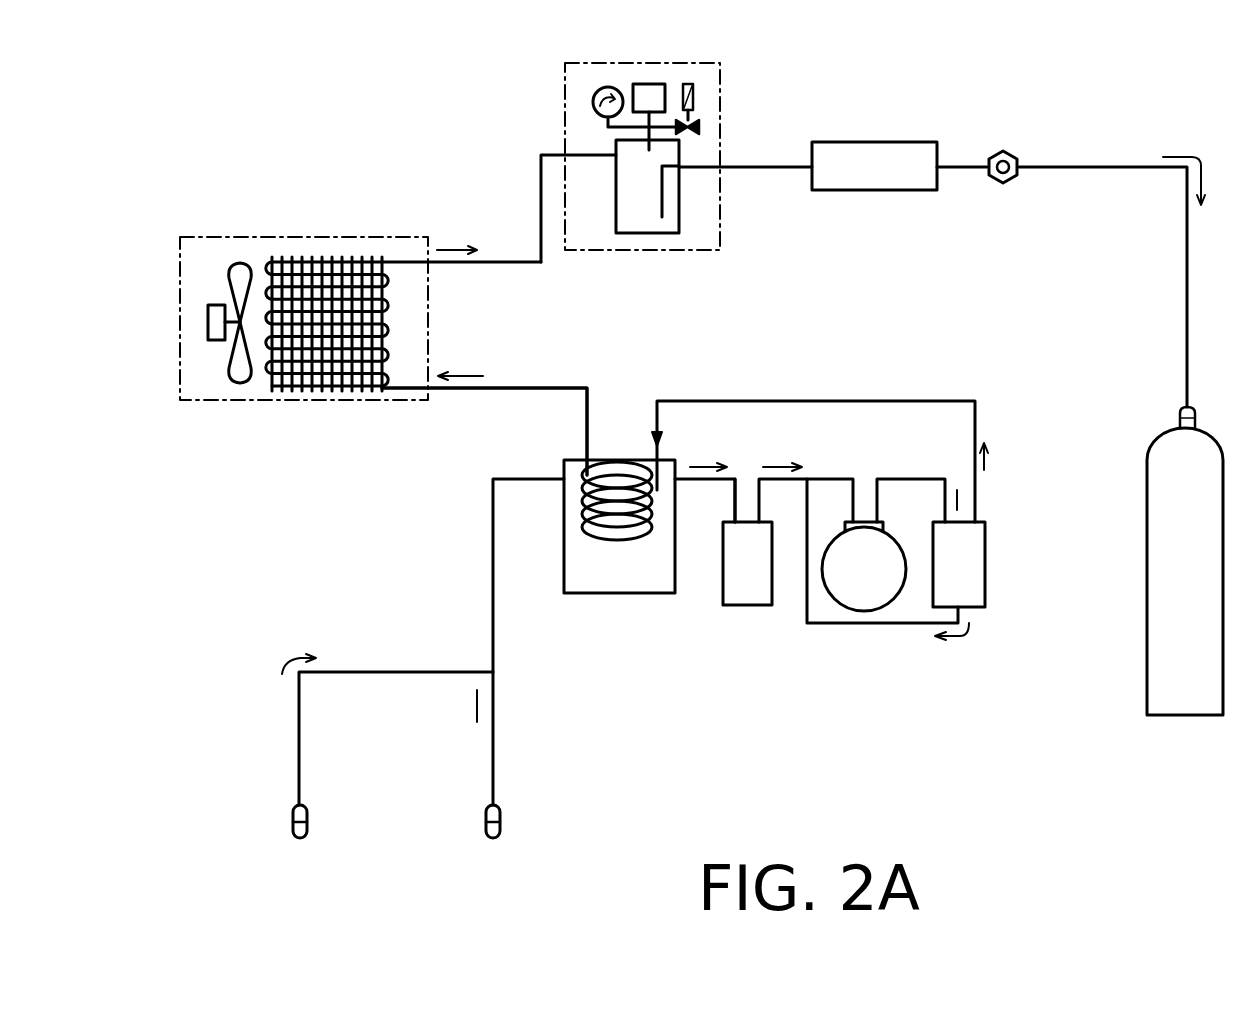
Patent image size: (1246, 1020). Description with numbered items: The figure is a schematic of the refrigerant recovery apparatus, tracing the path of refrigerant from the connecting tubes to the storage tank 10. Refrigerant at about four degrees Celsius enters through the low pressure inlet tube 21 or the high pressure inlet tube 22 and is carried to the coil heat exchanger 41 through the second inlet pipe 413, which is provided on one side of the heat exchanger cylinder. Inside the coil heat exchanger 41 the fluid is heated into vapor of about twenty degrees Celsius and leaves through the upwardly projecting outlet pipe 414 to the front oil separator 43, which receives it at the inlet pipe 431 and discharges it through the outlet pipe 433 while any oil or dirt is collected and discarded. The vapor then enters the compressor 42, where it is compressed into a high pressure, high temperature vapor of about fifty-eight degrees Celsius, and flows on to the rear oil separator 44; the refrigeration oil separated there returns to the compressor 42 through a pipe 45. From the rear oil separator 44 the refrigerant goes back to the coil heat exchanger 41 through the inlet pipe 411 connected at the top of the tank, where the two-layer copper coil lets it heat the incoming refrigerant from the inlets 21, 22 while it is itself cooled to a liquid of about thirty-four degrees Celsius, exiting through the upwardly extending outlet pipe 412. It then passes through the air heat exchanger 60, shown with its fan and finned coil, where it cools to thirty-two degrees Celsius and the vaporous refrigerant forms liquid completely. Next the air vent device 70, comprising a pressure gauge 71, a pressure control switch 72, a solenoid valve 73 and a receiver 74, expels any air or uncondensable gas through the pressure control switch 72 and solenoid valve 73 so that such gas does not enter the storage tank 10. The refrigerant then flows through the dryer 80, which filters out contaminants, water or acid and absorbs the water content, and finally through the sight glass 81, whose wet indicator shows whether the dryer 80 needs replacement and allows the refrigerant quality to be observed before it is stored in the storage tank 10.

The storage tank 10 is at (1147, 632).
The low pressure inlet tube 21 is at (307, 832).
The high pressure inlet tube 22 is at (500, 832).
The coil heat exchanger 41 is at (637, 593).
The inlet pipe 411 is at (661, 414).
The outlet pipe 412 is at (585, 405).
The second inlet pipe 413 is at (490, 512).
The outlet pipe 414 is at (700, 482).
The compressor 42 is at (890, 543).
The front oil separator 43 is at (768, 547).
The inlet pipe 431 is at (738, 483).
The outlet pipe 433 is at (755, 487).
The rear oil separator 44 is at (990, 560).
The pipe 45 is at (893, 623).
The air heat exchanger 60 is at (270, 398).
The air vent device 70 is at (638, 156).
The pressure gauge 71 is at (597, 92).
The pressure control switch 72 is at (648, 83).
The solenoid valve 73 is at (694, 102).
The receiver 74 is at (663, 233).
The dryer 80 is at (880, 142).
The sight glass 81 is at (1009, 152).